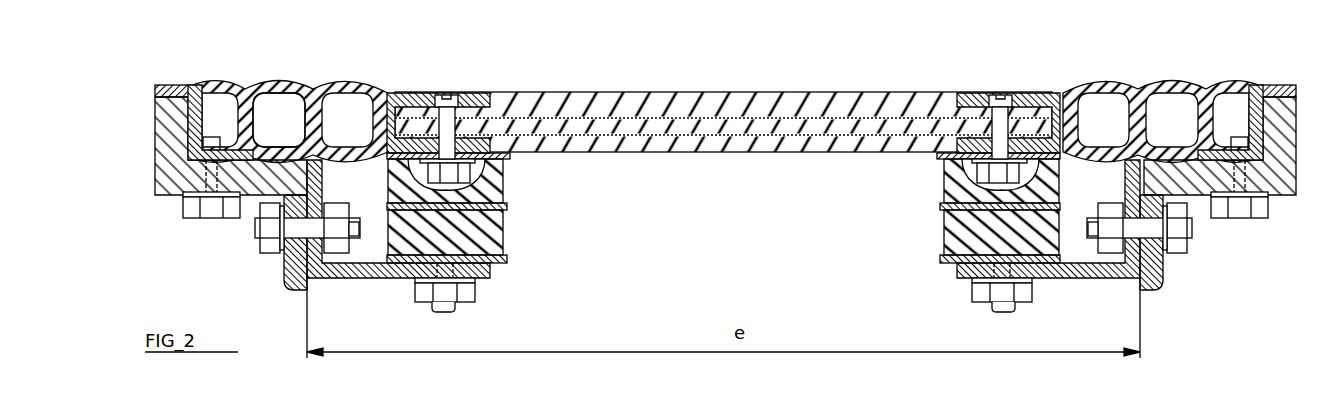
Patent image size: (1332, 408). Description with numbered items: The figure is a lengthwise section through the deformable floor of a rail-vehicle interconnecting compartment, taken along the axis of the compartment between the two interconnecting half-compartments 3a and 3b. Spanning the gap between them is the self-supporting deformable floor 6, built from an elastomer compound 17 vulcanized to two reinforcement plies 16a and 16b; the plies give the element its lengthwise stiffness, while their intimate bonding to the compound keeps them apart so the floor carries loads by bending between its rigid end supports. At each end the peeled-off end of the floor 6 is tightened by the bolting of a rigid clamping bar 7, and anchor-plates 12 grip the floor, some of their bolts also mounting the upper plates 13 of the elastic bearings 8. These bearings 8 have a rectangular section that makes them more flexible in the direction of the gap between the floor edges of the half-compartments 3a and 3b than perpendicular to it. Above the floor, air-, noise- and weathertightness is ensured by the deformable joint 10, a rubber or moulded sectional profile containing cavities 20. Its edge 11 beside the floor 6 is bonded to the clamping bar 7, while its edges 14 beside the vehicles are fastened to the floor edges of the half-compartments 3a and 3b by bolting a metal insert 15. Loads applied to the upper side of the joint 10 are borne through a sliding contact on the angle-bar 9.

The interconnecting half-compartment 3a is at (258, 185).
The interconnecting half-compartment 3b is at (1195, 200).
The deformable floor 6 is at (723, 118).
The rigid clamping bar 7 is at (420, 96).
The elastic bearing 8 is at (503, 243).
The angle-bar 9 is at (318, 278).
The deformable joint 10 is at (725, 98).
The edge of the deformable joint 11 is at (382, 94).
The anchor-plate 12 is at (503, 187).
The upper plate 13 is at (500, 158).
The edge of the deformable joint 14 is at (195, 86).
The metal insert 15 is at (175, 86).
The reinforcement ply 16a is at (525, 92).
The reinforcement ply 16b is at (585, 155).
The elastomer compound 17 is at (618, 110).
The cavity 20 is at (285, 117).